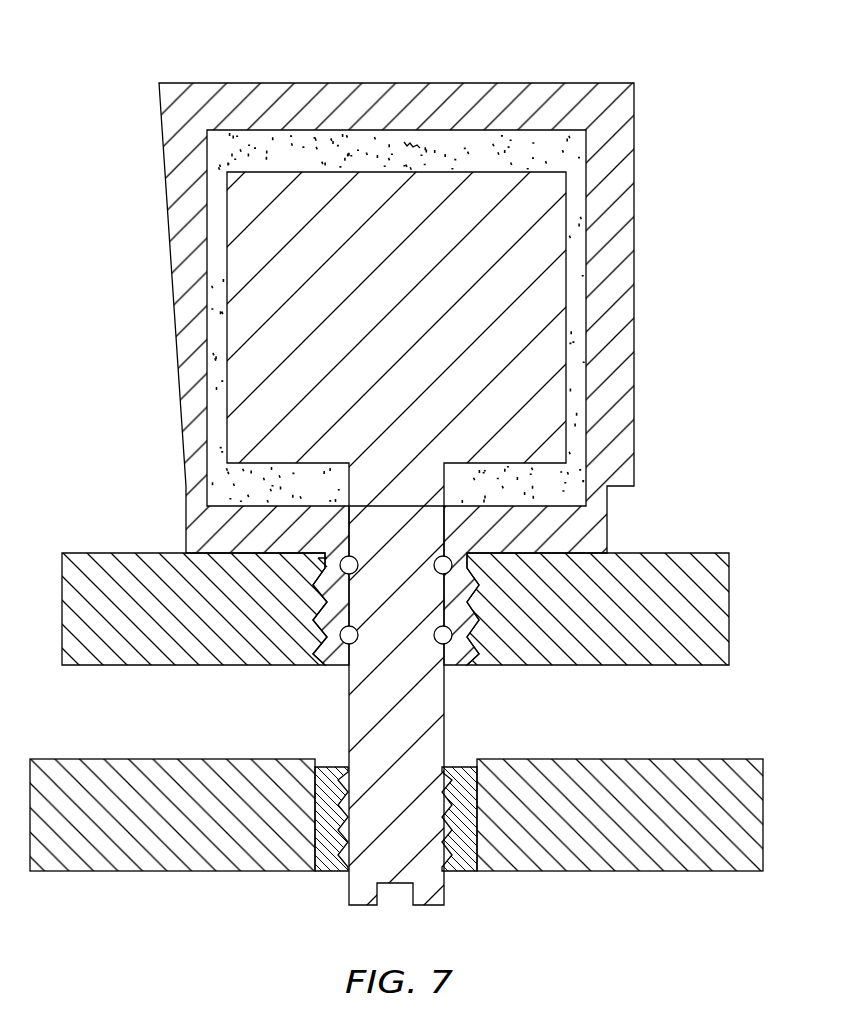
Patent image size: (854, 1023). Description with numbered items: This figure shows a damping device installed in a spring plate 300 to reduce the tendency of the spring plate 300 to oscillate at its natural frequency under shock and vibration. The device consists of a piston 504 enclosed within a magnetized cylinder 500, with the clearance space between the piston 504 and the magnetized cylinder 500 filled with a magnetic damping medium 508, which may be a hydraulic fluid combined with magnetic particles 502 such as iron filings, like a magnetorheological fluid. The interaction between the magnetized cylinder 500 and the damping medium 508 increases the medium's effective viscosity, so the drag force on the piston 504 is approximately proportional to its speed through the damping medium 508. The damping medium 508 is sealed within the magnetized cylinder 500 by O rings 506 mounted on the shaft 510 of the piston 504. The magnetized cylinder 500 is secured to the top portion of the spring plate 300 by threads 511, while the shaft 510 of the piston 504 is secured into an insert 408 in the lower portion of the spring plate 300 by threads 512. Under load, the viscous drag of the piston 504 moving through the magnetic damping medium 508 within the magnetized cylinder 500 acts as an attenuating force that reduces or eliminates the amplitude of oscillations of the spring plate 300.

The magnetized cylinder 500 is at (413, 465).
The magnetic particles 502 is at (345, 157).
The piston 504 is at (600, 262).
The damping medium 508 is at (413, 145).
The shaft 510 is at (445, 735).
The threads 511 is at (318, 566).
The O rings 506 is at (443, 645).
The spring plate 300 is at (645, 553).
The threads 512 is at (318, 853).
The insert 408 is at (478, 848).